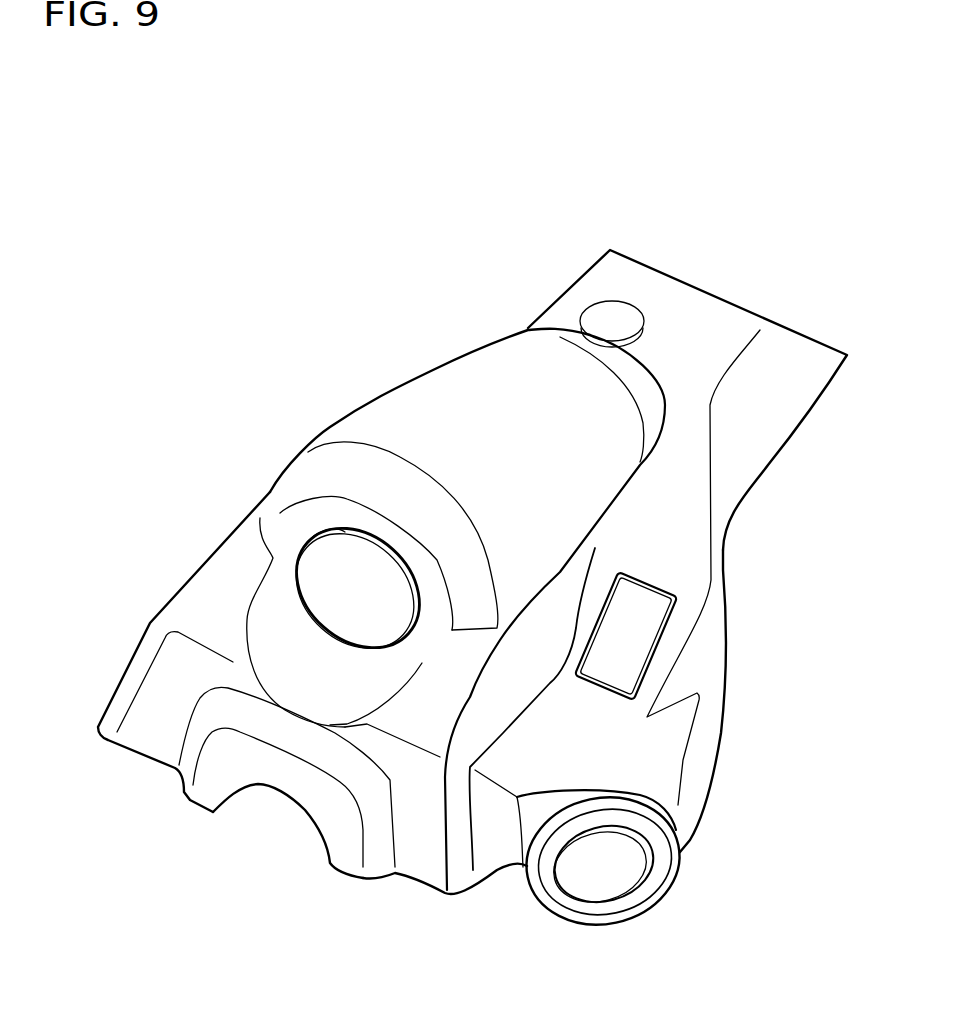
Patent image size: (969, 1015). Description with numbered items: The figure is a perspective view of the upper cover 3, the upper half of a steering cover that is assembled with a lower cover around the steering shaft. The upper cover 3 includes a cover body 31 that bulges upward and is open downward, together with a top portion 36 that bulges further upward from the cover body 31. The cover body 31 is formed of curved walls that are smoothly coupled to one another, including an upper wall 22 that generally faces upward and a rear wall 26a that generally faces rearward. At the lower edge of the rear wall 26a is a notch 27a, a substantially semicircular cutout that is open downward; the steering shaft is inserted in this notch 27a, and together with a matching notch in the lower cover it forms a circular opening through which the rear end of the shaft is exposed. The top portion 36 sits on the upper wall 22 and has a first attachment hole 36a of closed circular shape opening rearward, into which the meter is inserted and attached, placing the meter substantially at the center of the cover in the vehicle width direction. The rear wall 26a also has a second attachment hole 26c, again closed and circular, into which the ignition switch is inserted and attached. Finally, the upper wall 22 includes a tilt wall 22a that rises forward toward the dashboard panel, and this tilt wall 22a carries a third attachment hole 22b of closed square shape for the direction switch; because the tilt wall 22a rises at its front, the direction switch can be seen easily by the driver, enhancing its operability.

The upper cover 3 is at (313, 250).
The upper wall 22 is at (632, 278).
The tilt wall 22a is at (677, 555).
The third attachment hole 22b is at (607, 687).
The rear wall 26a is at (153, 730).
The second attachment hole 26c is at (635, 835).
The notch 27a is at (313, 817).
The cover body 31 is at (203, 568).
The top portion 36 is at (370, 420).
The first attachment hole 36a is at (310, 540).